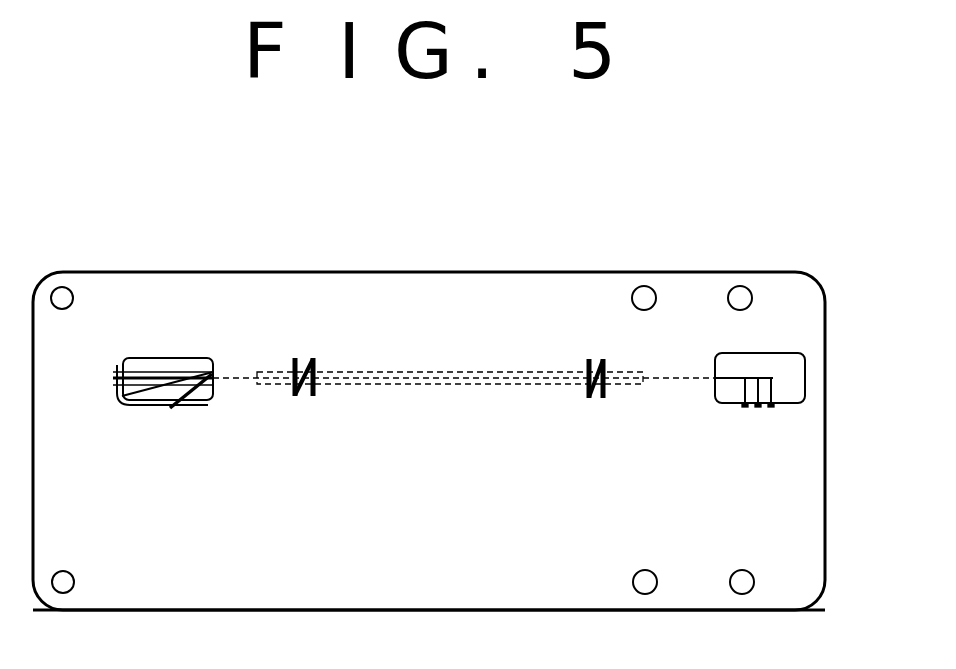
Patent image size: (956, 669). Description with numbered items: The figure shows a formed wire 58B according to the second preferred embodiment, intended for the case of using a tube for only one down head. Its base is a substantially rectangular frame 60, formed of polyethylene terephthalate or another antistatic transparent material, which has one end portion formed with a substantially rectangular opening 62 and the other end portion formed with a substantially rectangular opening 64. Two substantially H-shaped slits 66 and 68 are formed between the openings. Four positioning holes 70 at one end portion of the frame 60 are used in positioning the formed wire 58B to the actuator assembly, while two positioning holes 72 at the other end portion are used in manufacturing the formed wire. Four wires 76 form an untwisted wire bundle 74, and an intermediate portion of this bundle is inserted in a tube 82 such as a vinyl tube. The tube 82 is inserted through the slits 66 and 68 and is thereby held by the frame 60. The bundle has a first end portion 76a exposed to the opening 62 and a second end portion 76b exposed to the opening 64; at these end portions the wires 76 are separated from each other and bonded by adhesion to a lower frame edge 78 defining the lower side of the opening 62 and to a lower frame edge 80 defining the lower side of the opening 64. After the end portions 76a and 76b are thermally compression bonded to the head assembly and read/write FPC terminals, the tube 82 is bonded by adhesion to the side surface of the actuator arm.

The formed wire 58B is at (368, 271).
The frame 60 is at (432, 612).
The opening 62 is at (795, 372).
The opening 64 is at (168, 358).
The slit 66 is at (592, 400).
The slit 68 is at (300, 398).
The positioning holes 70 is at (644, 286).
The positioning holes 72 is at (62, 287).
The untwisted wire bundle 74 is at (233, 386).
The wires 76 is at (732, 376).
The first end portion 76a is at (745, 388).
The second end portion 76b is at (160, 386).
The lower frame edge 78 is at (760, 409).
The lower frame edge 80 is at (120, 406).
The tube 82 is at (448, 386).